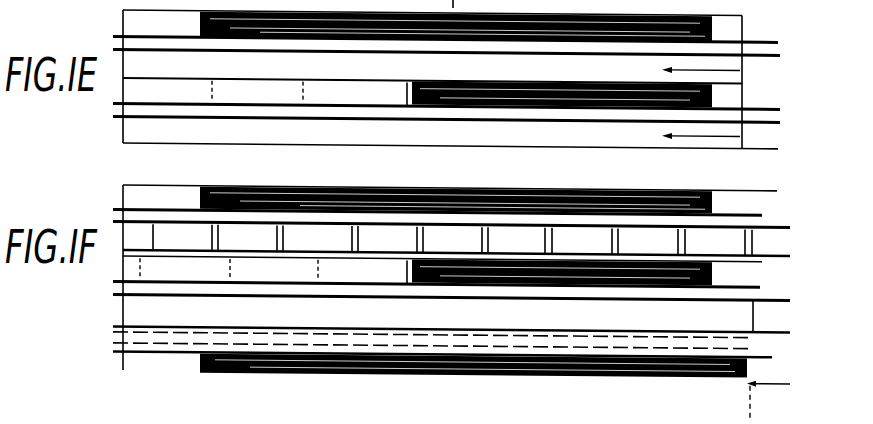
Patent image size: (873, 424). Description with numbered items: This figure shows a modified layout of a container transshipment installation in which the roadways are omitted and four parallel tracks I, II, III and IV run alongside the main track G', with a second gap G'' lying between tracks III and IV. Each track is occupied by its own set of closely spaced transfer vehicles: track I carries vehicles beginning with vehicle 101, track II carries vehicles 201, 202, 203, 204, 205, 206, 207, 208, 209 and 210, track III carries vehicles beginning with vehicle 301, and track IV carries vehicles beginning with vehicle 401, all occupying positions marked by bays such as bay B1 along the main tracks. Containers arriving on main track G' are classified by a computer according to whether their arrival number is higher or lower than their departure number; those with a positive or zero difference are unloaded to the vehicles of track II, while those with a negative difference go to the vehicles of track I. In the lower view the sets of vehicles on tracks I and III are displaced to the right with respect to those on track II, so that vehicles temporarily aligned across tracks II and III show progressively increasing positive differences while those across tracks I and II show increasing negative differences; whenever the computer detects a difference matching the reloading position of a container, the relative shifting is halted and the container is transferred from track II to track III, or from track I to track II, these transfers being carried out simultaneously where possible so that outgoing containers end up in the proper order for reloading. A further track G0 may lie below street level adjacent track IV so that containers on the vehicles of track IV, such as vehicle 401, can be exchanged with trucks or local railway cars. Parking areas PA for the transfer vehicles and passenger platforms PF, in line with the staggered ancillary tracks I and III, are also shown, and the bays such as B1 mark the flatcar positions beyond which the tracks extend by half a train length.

In FIG. 1E, the transfer vehicle 101 is at (787, 29).
In FIG. 1E, the transfer vehicle 201 is at (787, 70).
In FIG. 1F, the transfer vehicle 201 is at (182, 238).
In FIG. 1F, the transfer vehicle 202 is at (247, 239).
In FIG. 1F, the transfer vehicle 203 is at (317, 239).
In FIG. 1F, the transfer vehicle 204 is at (387, 240).
In FIG. 1F, the transfer vehicle 205 is at (452, 241).
In FIG. 1F, the transfer vehicle 206 is at (516, 241).
In FIG. 1F, the transfer vehicle 207 is at (582, 242).
In FIG. 1F, the transfer vehicle 208 is at (648, 242).
In FIG. 1F, the transfer vehicle 209 is at (715, 243).
In FIG. 1F, the transfer vehicle 210 is at (795, 237).
In FIG. 1E, the transfer vehicle 301 is at (787, 102).
In FIG. 1E, the transfer vehicle 401 is at (786, 147).
In FIG. 1F, the transfer vehicle 401 is at (797, 316).
In FIG. 1E, the track I is at (793, 28).
In FIG. 1F, the track I is at (762, 204).
In FIG. 1E, the track II is at (795, 71).
In FIG. 1F, the track II is at (803, 245).
In FIG. 1E, the track III is at (798, 102).
In FIG. 1F, the track III is at (743, 272).
In FIG. 1E, the track IV is at (798, 150).
In FIG. 1F, the track IV is at (806, 322).
In FIG. 1E, the main track G' is at (456, 58).
In FIG. 1F, the main track G' is at (780, 217).
In FIG. 1E, the second gap G'' is at (458, 126).
In FIG. 1F, the second gap G'' is at (781, 289).
In FIG. 1F, the track G0 is at (757, 347).
In FIG. 1E, the parking area PA is at (243, 95).
In FIG. 1F, the parking area PA is at (127, 256).
In FIG. 1E, the passenger platform PF is at (410, 40).
In FIG. 1F, the passenger platform PF is at (433, 187).
In FIG. 1F, the bay B1 is at (768, 400).